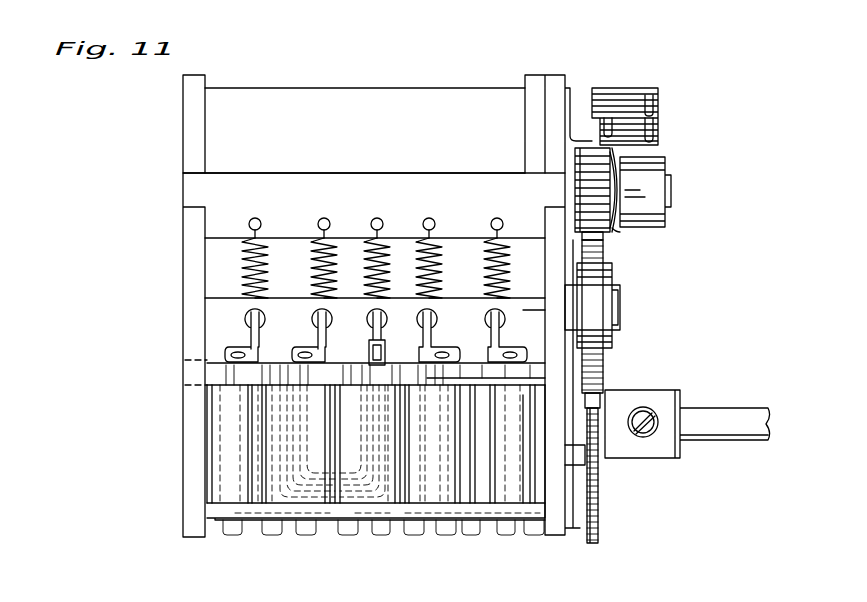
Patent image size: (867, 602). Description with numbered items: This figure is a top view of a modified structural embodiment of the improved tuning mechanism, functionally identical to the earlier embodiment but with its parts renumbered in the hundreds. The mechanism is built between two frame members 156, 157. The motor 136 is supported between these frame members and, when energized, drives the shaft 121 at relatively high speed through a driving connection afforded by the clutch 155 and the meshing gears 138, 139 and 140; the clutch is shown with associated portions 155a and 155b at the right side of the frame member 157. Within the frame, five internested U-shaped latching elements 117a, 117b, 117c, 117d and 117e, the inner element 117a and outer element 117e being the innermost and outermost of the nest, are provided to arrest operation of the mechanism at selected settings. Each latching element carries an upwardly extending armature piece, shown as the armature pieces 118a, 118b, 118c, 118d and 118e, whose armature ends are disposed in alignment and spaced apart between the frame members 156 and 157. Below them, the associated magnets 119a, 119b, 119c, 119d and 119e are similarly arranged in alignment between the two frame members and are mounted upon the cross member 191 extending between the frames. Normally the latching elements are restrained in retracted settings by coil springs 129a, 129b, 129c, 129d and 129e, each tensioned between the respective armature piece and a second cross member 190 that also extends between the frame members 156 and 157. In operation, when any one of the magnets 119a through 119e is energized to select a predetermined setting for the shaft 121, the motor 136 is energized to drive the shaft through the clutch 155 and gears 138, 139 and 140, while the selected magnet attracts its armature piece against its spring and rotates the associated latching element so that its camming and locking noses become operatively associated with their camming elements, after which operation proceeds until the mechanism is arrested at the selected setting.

The motor 136 is at (432, 88).
The second cross member 190 is at (286, 185).
The coil spring 129a is at (270, 215).
The coil spring 129b is at (333, 238).
The coil spring 129c is at (388, 238).
The coil spring 129d is at (443, 238).
The coil spring 129e is at (506, 238).
The armature piece 118a is at (250, 338).
The armature piece 118b is at (318, 333).
The armature piece 118c is at (371, 333).
The armature piece 118d is at (424, 333).
The armature piece 118e is at (490, 333).
The frame member 156 is at (183, 293).
The frame member 157 is at (567, 536).
The clutch 155 is at (681, 170).
The pinion sleeve 155a is at (665, 166).
The pinion flange 155b is at (612, 235).
The gear 138 is at (607, 234).
The gear 139 is at (603, 363).
The gear 140 is at (598, 511).
The shaft 121 is at (707, 410).
The inner latching element 117a is at (380, 515).
The latching element 117b is at (303, 505).
The latching element 117c is at (290, 510).
The latching element 117d is at (240, 488).
The outer latching element 117e is at (237, 426).
The magnet 119a is at (215, 447).
The magnet 119b is at (345, 503).
The magnet 119c is at (392, 503).
The magnet 119d is at (470, 503).
The magnet 119e is at (515, 503).
The cross member 191 is at (437, 513).